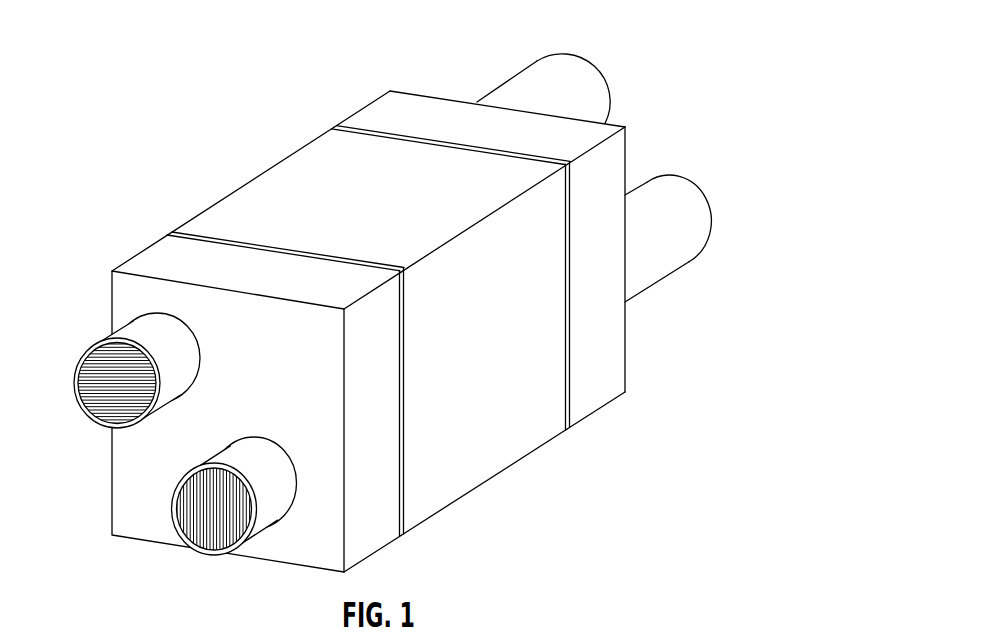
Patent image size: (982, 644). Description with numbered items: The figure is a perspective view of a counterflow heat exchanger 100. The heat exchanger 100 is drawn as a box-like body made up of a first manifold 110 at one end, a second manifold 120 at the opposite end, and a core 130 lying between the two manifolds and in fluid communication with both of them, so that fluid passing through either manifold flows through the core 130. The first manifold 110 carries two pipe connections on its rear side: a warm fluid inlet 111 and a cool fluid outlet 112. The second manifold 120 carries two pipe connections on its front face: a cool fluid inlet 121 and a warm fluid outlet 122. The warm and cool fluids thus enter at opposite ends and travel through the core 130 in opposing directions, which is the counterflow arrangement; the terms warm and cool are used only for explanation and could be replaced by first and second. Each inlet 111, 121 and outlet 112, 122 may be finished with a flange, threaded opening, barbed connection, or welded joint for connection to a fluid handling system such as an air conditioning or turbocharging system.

The counterflow heat exchanger 100 is at (390, 305).
The first manifold 110 is at (379, 112).
The warm fluid inlet 111 is at (695, 264).
The cool fluid outlet 112 is at (568, 54).
The second manifold 120 is at (157, 257).
The cool fluid inlet 121 is at (90, 417).
The warm fluid outlet 122 is at (182, 538).
The core 130 is at (259, 193).